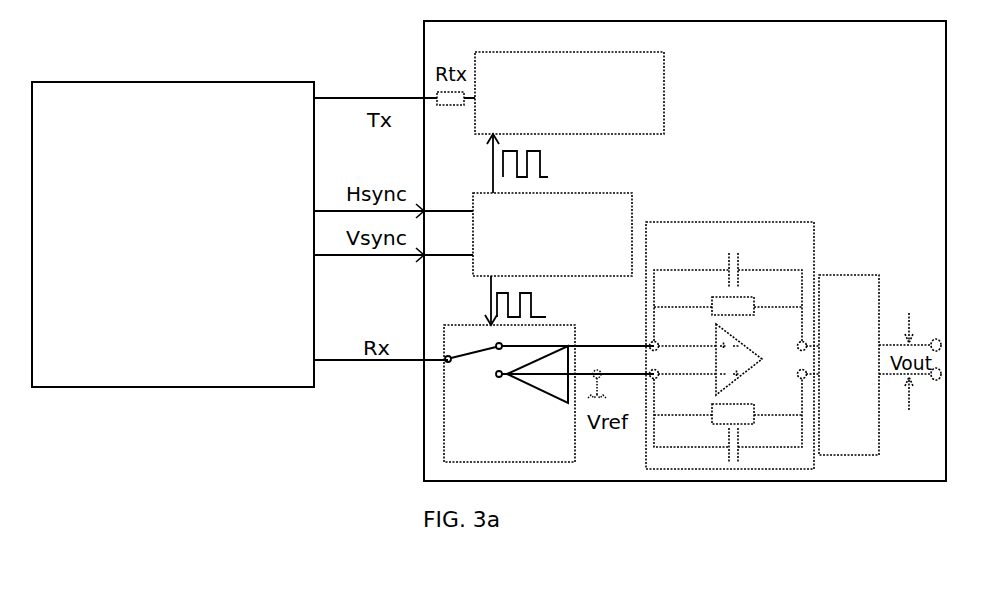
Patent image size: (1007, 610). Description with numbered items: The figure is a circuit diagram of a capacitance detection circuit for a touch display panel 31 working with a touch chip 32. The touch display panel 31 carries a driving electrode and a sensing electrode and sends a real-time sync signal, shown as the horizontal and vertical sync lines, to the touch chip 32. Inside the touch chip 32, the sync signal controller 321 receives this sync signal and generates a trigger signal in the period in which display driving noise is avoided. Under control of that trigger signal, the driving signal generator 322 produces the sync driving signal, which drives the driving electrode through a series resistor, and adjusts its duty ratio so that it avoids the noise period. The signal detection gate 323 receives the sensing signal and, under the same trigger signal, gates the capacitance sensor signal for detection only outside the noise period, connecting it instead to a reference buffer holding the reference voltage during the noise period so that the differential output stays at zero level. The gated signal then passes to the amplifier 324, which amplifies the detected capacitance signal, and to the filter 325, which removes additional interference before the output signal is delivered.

The touch display panel 31 is at (173, 234).
The touch chip 32 is at (685, 251).
The sync signal controller 321 is at (552, 234).
The driving signal generator 322 is at (569, 93).
The signal detection gate 323 is at (549, 393).
The amplifier 324 is at (732, 345).
The filter 325 is at (849, 365).